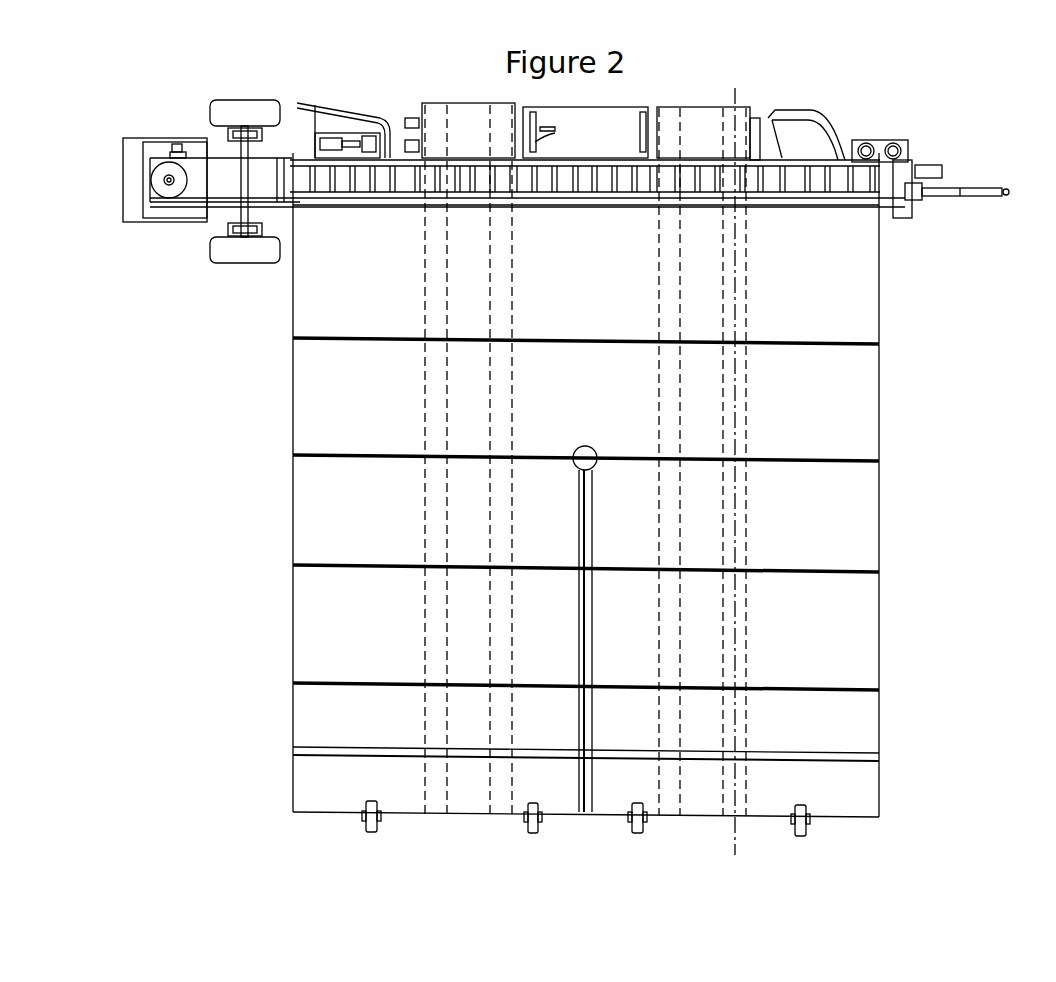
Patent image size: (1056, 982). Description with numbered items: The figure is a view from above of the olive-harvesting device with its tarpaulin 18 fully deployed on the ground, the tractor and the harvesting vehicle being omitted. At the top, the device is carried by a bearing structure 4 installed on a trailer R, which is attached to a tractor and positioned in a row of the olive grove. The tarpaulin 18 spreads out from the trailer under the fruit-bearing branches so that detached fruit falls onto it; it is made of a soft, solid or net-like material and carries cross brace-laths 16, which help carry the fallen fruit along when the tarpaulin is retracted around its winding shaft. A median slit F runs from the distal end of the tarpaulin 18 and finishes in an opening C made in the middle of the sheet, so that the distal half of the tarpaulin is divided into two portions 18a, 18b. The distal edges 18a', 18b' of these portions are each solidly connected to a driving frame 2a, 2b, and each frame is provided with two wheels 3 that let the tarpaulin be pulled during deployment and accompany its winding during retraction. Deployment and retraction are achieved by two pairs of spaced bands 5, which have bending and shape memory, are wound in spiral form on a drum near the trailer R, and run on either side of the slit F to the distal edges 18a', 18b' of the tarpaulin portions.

The trailer R is at (218, 176).
The bearing structure 4 is at (762, 90).
The bands 5 is at (735, 412).
The tarpaulin 18 is at (838, 301).
The cross brace-laths 16 is at (803, 688).
The opening C is at (574, 462).
The median slit F is at (584, 624).
The portion of tarpaulin 18a is at (373, 729).
The distal edge of portion 18a 18a' is at (372, 779).
The portion of tarpaulin 18b is at (792, 733).
The distal edge of portion 18b 18b' is at (795, 786).
The driving frame 2a is at (468, 815).
The driving frame 2b is at (702, 817).
The wheels 3 is at (381, 820).